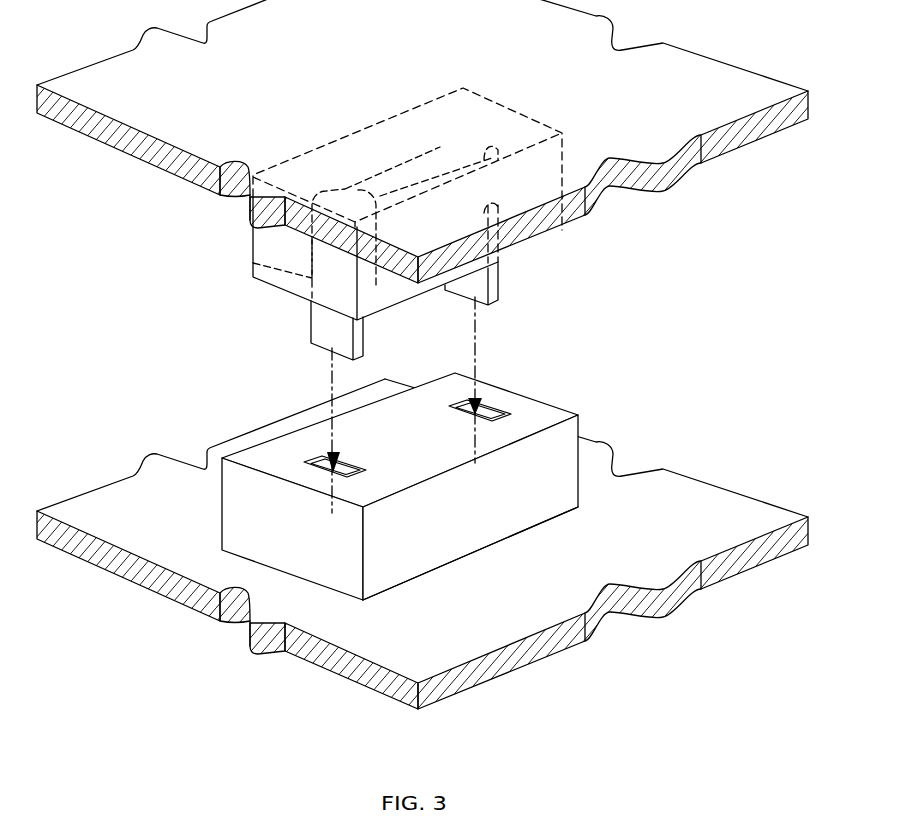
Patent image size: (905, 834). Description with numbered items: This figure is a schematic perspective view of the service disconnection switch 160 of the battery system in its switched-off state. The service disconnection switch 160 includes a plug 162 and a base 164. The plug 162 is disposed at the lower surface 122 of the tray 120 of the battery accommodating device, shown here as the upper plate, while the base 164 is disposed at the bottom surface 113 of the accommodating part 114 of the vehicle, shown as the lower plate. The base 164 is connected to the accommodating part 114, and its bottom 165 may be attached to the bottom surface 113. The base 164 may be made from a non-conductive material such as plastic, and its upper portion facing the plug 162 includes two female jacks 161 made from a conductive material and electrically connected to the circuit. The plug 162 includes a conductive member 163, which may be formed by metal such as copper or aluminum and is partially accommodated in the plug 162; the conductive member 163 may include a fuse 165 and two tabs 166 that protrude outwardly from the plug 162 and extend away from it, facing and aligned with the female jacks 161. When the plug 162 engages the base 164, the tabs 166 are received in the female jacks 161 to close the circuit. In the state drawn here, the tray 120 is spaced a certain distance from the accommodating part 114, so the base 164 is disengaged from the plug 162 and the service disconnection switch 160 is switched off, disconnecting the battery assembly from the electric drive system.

The bottom surface 113 is at (478, 631).
The accommodating part 114 is at (734, 490).
The tray 120 is at (422, 141).
The lower surface 122 is at (700, 167).
The service disconnection switch 160 is at (598, 118).
The female jacks 161 is at (345, 463).
The plug 162 is at (513, 110).
The conductive member 163 is at (253, 262).
The base 164 is at (558, 407).
The bottom 165 is at (455, 187).
The tabs 166 is at (312, 320).